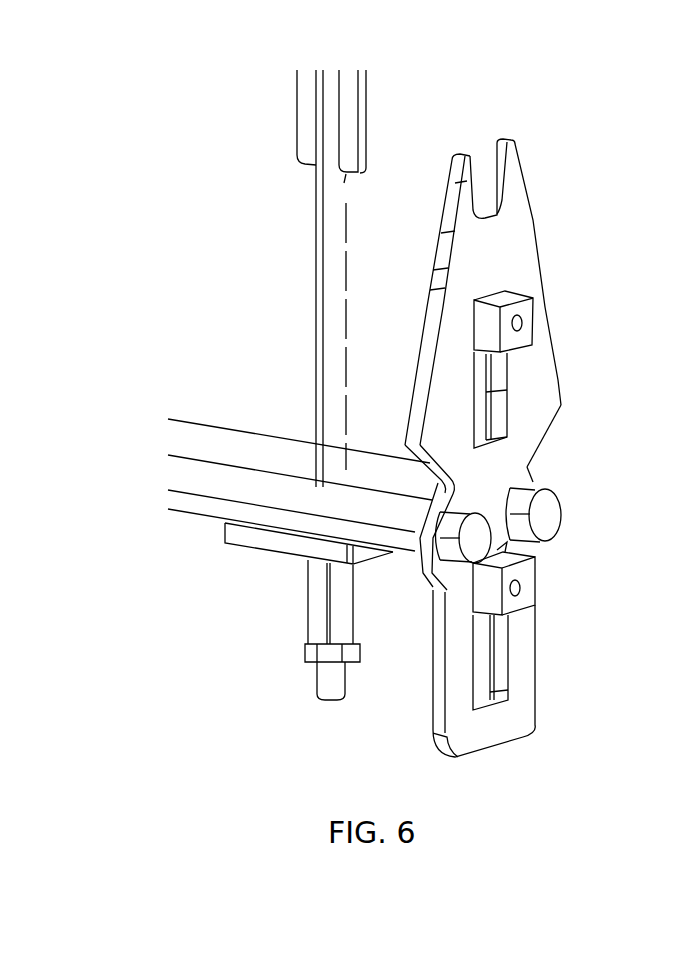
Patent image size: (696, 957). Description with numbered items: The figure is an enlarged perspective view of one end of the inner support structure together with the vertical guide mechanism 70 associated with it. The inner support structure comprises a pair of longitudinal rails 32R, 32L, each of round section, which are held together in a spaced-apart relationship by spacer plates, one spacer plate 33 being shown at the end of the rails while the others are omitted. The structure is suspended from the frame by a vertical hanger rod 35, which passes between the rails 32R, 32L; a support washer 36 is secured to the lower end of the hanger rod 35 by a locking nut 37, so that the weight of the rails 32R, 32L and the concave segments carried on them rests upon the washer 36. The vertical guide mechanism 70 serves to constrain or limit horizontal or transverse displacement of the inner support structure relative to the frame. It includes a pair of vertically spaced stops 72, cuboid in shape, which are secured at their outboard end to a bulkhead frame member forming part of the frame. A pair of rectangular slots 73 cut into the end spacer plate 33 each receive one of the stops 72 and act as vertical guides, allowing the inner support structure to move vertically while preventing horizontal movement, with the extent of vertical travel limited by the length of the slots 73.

The vertical guide mechanism 70 is at (632, 220).
The spacer plate 33 is at (553, 366).
The stop 72 is at (530, 300).
The rectangular slot 73 is at (500, 393).
The vertical hanger rod 35 is at (333, 236).
The longitudinal rail 32R is at (245, 430).
The longitudinal rail 32L is at (215, 497).
The support washer 36 is at (278, 545).
The locking nut 37 is at (345, 617).